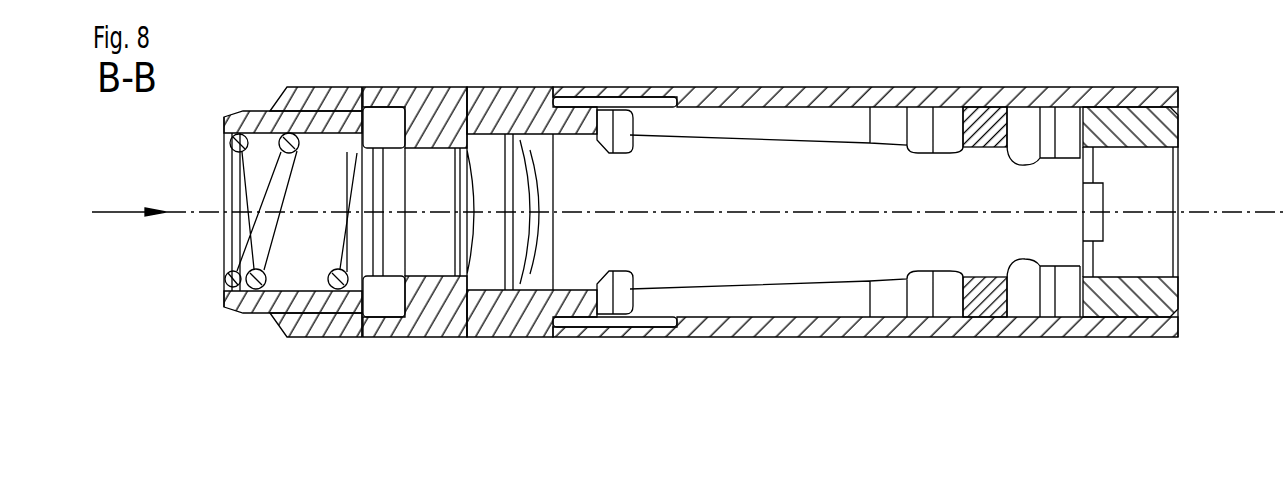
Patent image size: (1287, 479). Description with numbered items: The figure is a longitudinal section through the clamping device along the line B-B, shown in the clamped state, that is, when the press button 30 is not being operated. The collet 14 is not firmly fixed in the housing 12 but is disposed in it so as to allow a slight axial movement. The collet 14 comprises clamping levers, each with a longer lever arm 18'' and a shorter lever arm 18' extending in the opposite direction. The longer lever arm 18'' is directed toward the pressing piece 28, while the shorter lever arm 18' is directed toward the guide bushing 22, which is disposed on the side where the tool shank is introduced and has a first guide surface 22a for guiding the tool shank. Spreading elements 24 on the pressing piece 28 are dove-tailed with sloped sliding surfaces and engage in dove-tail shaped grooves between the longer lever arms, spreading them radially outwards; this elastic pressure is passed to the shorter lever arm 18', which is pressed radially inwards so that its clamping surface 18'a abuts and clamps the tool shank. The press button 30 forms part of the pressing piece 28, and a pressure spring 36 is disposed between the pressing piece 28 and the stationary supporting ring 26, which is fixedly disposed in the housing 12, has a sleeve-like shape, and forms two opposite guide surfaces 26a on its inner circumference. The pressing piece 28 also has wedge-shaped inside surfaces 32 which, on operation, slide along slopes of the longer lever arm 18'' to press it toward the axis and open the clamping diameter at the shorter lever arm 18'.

The housing 12 is at (860, 107).
The collet 14 is at (993, 120).
The shorter lever arm 18' is at (1043, 254).
The longer lever arm 18'' is at (796, 254).
The clamping surface 18'a is at (1116, 333).
The guide bushing 22 is at (1158, 110).
The first guide surface 22a is at (1175, 185).
The spreading element 24 is at (565, 110).
The supporting ring 26 is at (433, 113).
The guide surface 26a is at (428, 168).
The pressing piece 28 is at (322, 123).
The press button 30 is at (243, 117).
The wedge-shaped inside surface 32 is at (512, 112).
The pressure spring 36 is at (280, 176).